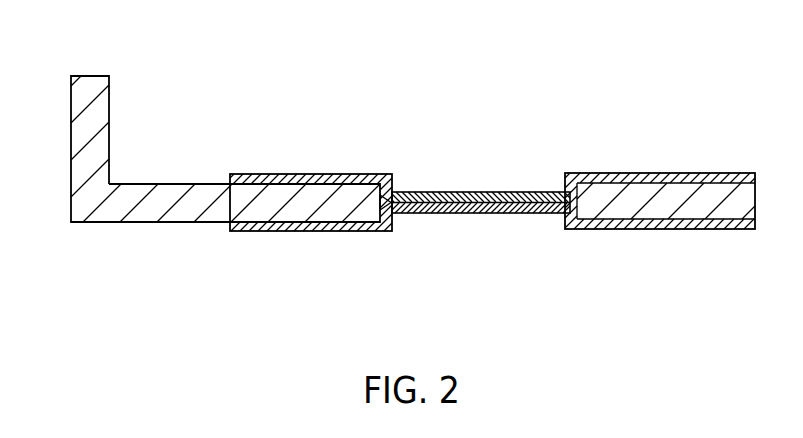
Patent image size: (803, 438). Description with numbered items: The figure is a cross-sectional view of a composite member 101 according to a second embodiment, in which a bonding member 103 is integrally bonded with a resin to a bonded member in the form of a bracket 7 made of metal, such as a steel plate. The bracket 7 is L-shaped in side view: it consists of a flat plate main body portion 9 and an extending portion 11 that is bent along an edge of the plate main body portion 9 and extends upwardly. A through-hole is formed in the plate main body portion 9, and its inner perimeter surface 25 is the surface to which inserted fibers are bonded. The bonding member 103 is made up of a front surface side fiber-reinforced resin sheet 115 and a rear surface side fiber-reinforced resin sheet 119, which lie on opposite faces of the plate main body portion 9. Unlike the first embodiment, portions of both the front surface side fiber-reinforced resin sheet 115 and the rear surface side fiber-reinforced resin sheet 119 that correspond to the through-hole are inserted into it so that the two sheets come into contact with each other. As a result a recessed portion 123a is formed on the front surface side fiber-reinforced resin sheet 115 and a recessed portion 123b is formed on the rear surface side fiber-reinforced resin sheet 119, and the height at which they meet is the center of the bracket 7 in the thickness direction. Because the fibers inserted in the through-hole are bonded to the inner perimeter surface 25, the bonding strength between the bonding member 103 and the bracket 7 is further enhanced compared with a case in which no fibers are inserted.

The composite member 101 is at (410, 103).
The bracket 7 is at (110, 95).
The extending portion 11 is at (71, 152).
The plate main body portion 9 is at (150, 224).
The inner perimeter surface 25 is at (394, 223).
The bonding member 103 is at (455, 190).
The recessed portion 123a is at (524, 191).
The recessed portion 123b is at (487, 214).
The front surface side fiber-reinforced resin sheet 115 is at (657, 172).
The rear surface side fiber-reinforced resin sheet 119 is at (640, 231).